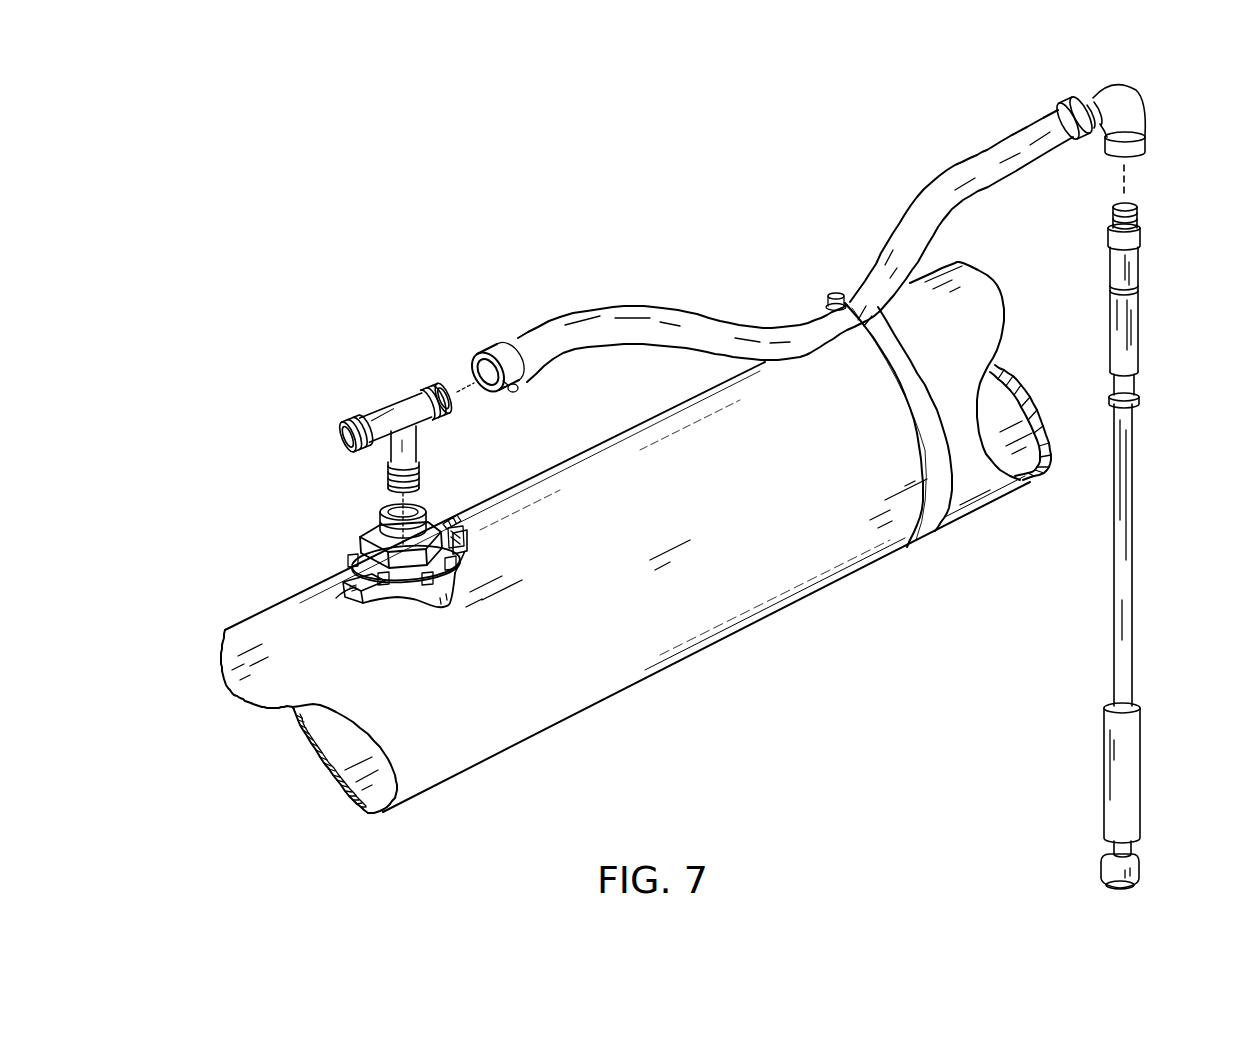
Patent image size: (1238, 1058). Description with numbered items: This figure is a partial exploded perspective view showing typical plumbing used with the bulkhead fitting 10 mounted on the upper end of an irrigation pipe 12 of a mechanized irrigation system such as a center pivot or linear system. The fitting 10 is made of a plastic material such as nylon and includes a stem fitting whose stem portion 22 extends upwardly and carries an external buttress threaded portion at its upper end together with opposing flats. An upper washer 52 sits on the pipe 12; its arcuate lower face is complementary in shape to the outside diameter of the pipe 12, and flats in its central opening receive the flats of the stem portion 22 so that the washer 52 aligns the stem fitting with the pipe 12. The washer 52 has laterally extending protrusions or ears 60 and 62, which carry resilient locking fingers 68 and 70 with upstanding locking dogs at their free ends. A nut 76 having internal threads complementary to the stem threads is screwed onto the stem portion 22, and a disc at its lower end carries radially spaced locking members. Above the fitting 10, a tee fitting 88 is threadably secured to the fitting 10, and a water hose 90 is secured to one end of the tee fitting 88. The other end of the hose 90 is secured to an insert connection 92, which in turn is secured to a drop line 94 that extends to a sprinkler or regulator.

The bulkhead fitting 10 is at (411, 558).
The irrigation pipe 12 is at (636, 537).
The stem portion 22 is at (425, 508).
The upper washer 52 is at (352, 603).
The protrusion 60 is at (380, 600).
The protrusion 62 is at (470, 556).
The resilient locking finger 68 is at (343, 582).
The resilient locking finger 70 is at (468, 542).
The nut 76 is at (462, 521).
The tee fitting 88 is at (391, 388).
The water hose 90 is at (550, 330).
The insert connection 92 is at (1142, 270).
The drop line 94 is at (1133, 495).